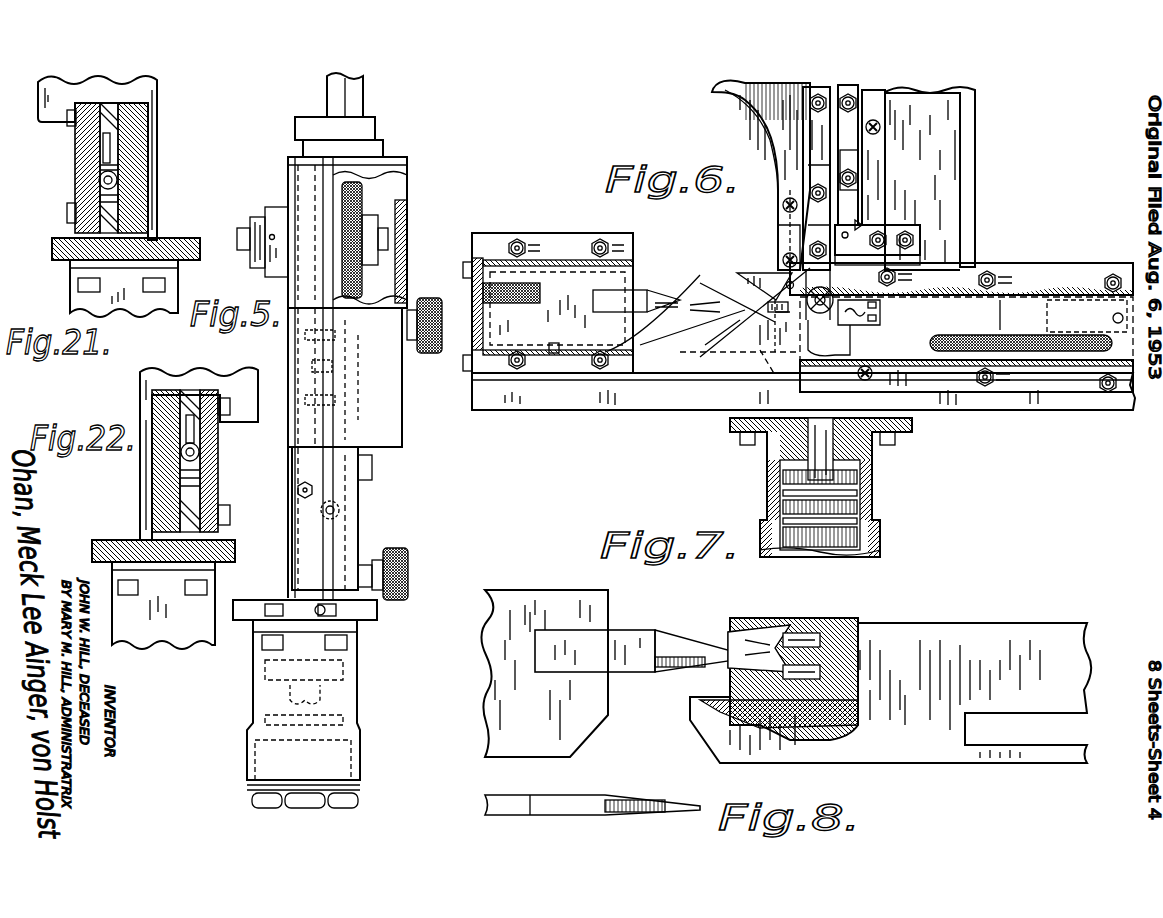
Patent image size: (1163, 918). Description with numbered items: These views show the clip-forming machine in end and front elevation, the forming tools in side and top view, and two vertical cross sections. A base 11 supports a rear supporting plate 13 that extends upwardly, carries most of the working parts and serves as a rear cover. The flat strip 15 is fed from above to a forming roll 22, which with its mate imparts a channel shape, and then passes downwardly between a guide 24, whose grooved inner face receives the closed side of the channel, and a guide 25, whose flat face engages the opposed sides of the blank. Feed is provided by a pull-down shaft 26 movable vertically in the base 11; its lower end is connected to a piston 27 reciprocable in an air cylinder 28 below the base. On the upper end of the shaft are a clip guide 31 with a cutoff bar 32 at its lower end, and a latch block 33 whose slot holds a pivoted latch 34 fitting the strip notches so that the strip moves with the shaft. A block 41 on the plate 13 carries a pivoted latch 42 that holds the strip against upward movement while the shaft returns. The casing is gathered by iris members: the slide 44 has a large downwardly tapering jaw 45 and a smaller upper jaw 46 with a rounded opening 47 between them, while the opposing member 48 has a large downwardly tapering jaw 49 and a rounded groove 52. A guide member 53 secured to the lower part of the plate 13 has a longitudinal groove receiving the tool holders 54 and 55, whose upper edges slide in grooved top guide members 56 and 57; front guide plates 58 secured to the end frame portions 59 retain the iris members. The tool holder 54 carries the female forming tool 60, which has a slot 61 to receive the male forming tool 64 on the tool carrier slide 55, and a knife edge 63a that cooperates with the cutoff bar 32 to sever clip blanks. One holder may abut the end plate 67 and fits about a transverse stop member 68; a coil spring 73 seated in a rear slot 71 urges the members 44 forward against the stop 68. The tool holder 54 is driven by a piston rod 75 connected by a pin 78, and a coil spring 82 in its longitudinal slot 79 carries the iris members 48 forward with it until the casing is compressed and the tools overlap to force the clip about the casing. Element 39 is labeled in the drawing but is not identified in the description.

In FIG. 22, the base 11 is at (233, 550).
In FIG. 5, the base 11 is at (378, 610).
In FIG. 22, the rear supporting plate 13 is at (152, 372).
In FIG. 5, the rear supporting plate 13 is at (283, 442).
In FIG. 6, the flat material strip 15 is at (775, 140).
In FIG. 5, the forming roll 22 is at (383, 190).
In FIG. 6, the guide 24 is at (820, 115).
In FIG. 6, the guide 25 is at (860, 112).
In FIG. 6, the pull-down shaft 26 is at (785, 388).
In FIG. 7, the piston 27 is at (872, 487).
In FIG. 7, the air cylinder 28 is at (880, 530).
In FIG. 6, the clip guide 31 is at (782, 210).
In FIG. 6, the cutoff bar 32 is at (782, 258).
In FIG. 6, the latch holder or block 33 is at (852, 160).
In FIG. 6, the latch 34 is at (860, 225).
In FIG. 6, the bar 39 is at (790, 235).
In FIG. 6, the block 41 is at (910, 222).
In FIG. 6, the latch 42 is at (905, 258).
In FIG. 22, the slide or iris member 44 is at (200, 478).
In FIG. 6, the slide or iris member 44 is at (645, 278).
In FIG. 6, the downwardly tapering jaw 45 is at (722, 322).
In FIG. 6, the upper tapering jaw 46 is at (692, 296).
In FIG. 6, the rounded opening 47 is at (704, 300).
In FIG. 21, the gathering or iris member 48 is at (103, 160).
In FIG. 6, the gathering or iris member 48 is at (760, 276).
In FIG. 6, the downwardly tapering jaw 49 is at (760, 350).
In FIG. 6, the rounded groove 52 is at (767, 317).
In FIG. 21, the guide member 53 is at (112, 212).
In FIG. 22, the guide member 53 is at (222, 508).
In FIG. 21, the tool holder 54 is at (125, 138).
In FIG. 6, the tool holder 54 is at (1000, 310).
In FIG. 8, the tool holder 54 is at (958, 630).
In FIG. 22, the tool holder or tool carrier slide 55 is at (200, 446).
In FIG. 6, the tool holder or tool carrier slide 55 is at (572, 265).
In FIG. 8, the tool holder or tool carrier slide 55 is at (535, 600).
In FIG. 21, the top guide member 56 is at (140, 102).
In FIG. 22, the top guide member 57 is at (195, 395).
In FIG. 5, the top guide member 57 is at (362, 478).
In FIG. 21, the front guide plate 58 is at (75, 142).
In FIG. 22, the front guide plate 58 is at (220, 440).
In FIG. 5, the front guide plate 58 is at (362, 526).
In FIG. 8, the front guide plate 58 is at (840, 620).
In FIG. 21, the end frame portion 59 is at (115, 170).
In FIG. 22, the end frame portion 59 is at (162, 476).
In FIG. 5, the end frame portion 59 is at (300, 560).
In FIG. 6, the female forming tool 60 is at (882, 314).
In FIG. 8, the slot 61 is at (808, 630).
In FIG. 8, the knife edge 63a is at (735, 625).
In FIG. 6, the male forming tool 64 is at (635, 300).
In FIG. 8, the male forming tool 64 is at (628, 640).
In FIG. 6, the end plate 67 is at (483, 288).
In FIG. 6, the transverse stop member 68 is at (553, 355).
In FIG. 6, the slot 71 is at (533, 240).
In FIG. 5, the coil spring 73 is at (340, 510).
In FIG. 6, the coil spring 73 is at (525, 290).
In FIG. 6, the piston rod 75 is at (1048, 332).
In FIG. 6, the pin or bolt 78 is at (1112, 312).
In FIG. 8, the longitudinal slot 79 is at (1025, 740).
In FIG. 6, the coil spring 82 is at (1092, 352).